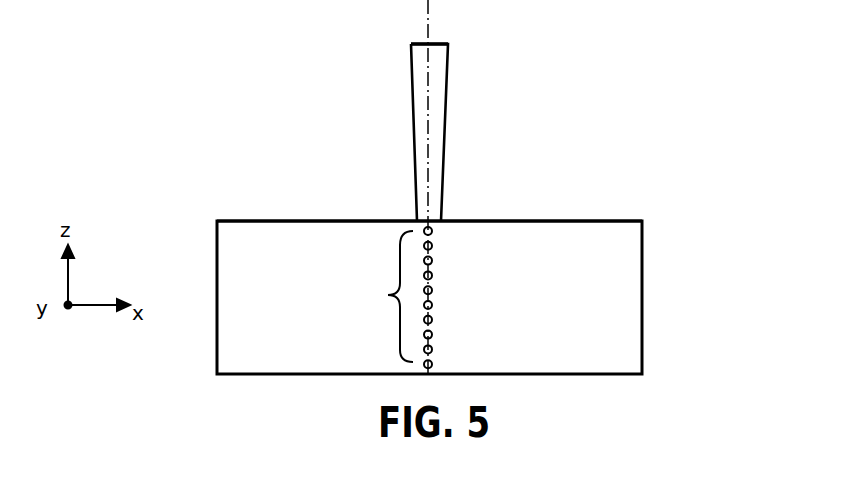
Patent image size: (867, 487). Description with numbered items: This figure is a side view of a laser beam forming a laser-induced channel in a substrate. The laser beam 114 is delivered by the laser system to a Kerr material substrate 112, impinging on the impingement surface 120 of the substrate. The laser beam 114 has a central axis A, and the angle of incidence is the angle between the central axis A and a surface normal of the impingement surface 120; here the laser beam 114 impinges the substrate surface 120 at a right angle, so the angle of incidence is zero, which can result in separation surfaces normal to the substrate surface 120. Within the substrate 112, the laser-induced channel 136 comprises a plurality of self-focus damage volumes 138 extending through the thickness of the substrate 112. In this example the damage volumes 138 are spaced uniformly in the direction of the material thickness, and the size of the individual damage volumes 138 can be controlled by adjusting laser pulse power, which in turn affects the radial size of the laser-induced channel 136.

The central axis A is at (432, 57).
The laser beam 114 is at (446, 118).
The substrate 112 is at (642, 283).
The impingement surface 120 is at (590, 221).
The self-focus damage volumes 138 is at (433, 290).
The laser-induced channel 136 is at (388, 296).